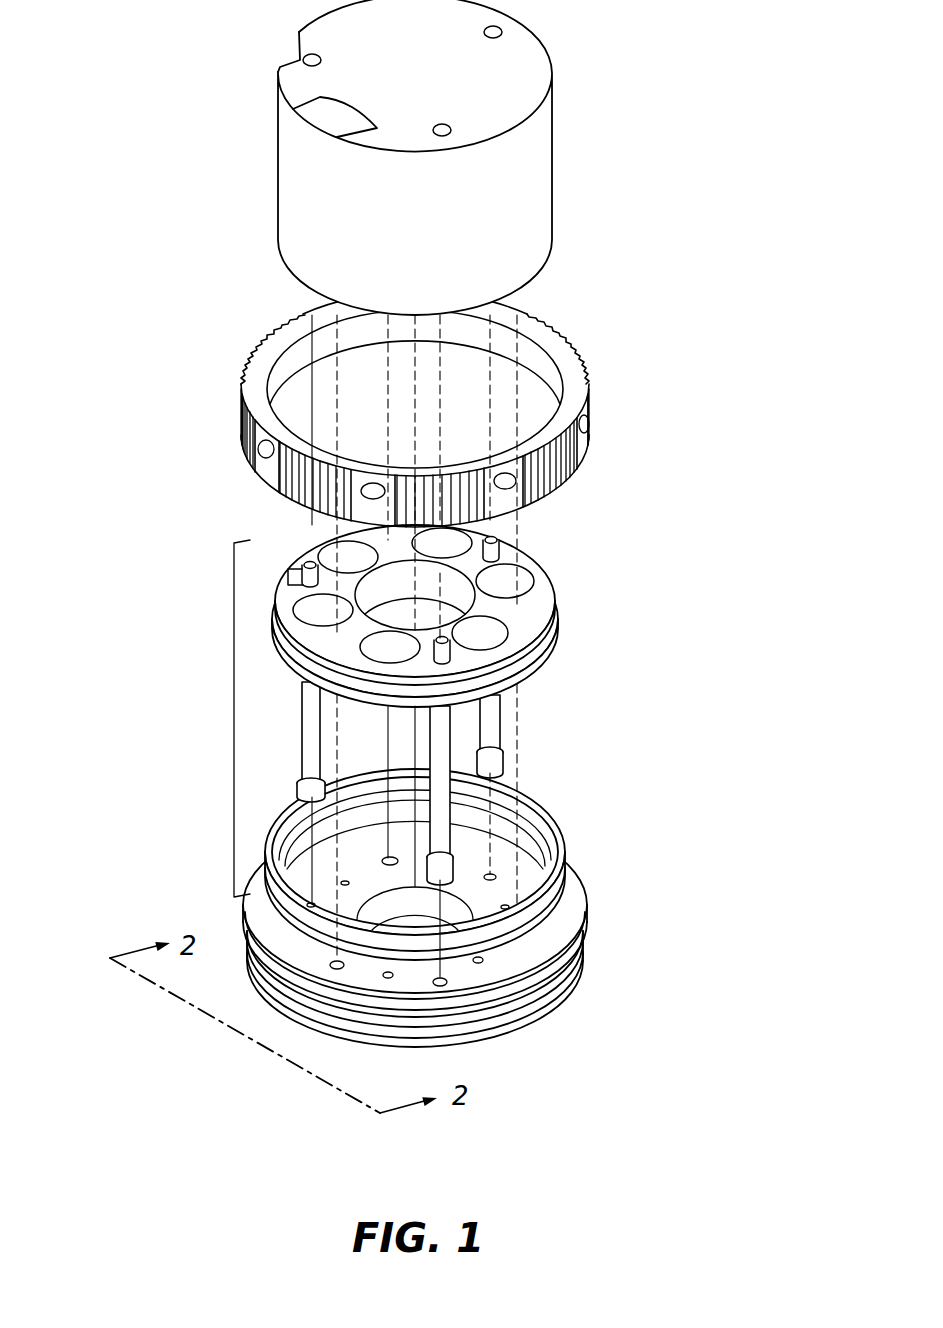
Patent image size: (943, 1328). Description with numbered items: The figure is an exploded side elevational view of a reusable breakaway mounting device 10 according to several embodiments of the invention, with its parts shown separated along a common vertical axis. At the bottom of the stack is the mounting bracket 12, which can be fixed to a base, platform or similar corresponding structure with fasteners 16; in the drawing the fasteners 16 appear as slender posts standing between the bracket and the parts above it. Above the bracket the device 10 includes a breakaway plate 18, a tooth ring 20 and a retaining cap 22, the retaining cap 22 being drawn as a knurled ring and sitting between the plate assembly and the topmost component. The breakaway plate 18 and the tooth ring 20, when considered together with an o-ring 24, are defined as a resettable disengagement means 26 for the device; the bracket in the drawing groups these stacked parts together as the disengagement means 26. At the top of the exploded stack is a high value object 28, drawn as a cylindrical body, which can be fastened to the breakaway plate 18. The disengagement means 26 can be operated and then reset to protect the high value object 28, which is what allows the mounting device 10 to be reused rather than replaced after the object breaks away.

The reusable breakaway mounting device 10 is at (125, 816).
The mounting bracket 12 is at (581, 914).
The fasteners 16 is at (503, 757).
The breakaway plate 18 is at (548, 563).
The tooth ring 20 is at (546, 813).
The retaining cap 22 is at (565, 336).
The o-ring 24 is at (557, 615).
The resettable disengagement means 26 is at (234, 585).
The high value object 28 is at (552, 95).